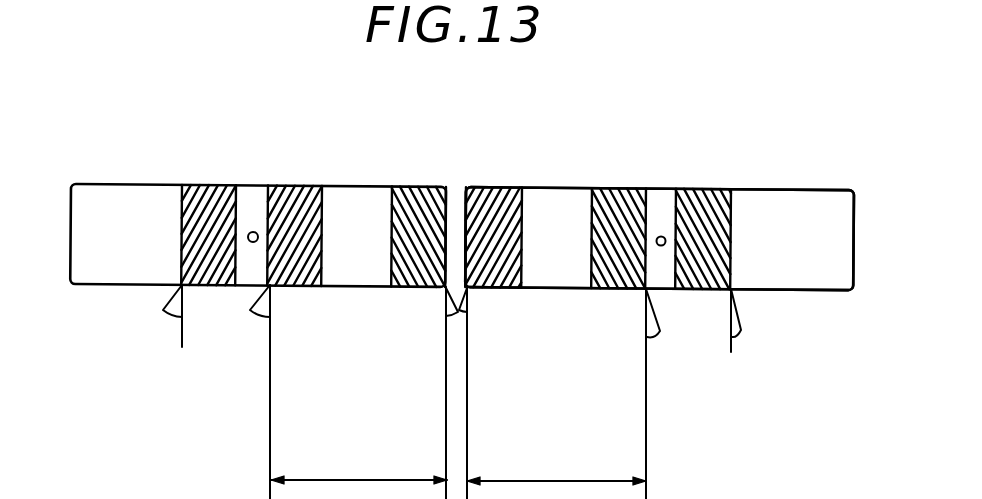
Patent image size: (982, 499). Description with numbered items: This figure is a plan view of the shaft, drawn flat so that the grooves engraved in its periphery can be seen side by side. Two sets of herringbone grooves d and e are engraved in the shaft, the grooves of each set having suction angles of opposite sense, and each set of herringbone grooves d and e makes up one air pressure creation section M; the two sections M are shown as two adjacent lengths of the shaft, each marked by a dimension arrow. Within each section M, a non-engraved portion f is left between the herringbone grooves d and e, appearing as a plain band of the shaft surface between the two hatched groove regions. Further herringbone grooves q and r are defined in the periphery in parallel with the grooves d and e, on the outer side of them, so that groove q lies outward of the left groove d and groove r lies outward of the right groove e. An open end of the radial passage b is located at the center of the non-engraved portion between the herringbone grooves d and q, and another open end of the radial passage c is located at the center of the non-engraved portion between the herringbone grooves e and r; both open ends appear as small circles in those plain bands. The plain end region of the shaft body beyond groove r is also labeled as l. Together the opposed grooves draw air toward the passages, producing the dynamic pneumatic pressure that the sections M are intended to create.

The non-engraved portion f is at (352, 185).
The bar body l is at (812, 210).
The herringbone groove q is at (223, 185).
The herringbone groove d is at (299, 185).
The herringbone groove e is at (423, 185).
The herringbone groove r is at (693, 188).
The radial passage b is at (254, 232).
The radial passage c is at (662, 236).
The air pressure creation section M is at (288, 452).